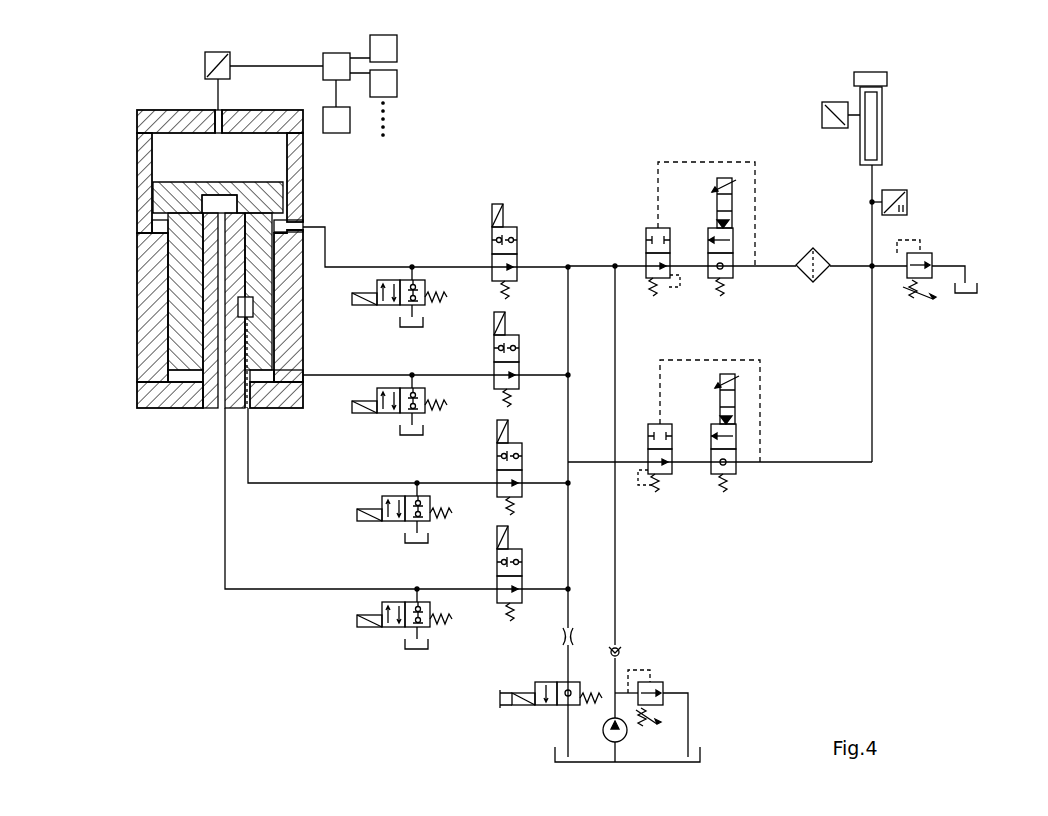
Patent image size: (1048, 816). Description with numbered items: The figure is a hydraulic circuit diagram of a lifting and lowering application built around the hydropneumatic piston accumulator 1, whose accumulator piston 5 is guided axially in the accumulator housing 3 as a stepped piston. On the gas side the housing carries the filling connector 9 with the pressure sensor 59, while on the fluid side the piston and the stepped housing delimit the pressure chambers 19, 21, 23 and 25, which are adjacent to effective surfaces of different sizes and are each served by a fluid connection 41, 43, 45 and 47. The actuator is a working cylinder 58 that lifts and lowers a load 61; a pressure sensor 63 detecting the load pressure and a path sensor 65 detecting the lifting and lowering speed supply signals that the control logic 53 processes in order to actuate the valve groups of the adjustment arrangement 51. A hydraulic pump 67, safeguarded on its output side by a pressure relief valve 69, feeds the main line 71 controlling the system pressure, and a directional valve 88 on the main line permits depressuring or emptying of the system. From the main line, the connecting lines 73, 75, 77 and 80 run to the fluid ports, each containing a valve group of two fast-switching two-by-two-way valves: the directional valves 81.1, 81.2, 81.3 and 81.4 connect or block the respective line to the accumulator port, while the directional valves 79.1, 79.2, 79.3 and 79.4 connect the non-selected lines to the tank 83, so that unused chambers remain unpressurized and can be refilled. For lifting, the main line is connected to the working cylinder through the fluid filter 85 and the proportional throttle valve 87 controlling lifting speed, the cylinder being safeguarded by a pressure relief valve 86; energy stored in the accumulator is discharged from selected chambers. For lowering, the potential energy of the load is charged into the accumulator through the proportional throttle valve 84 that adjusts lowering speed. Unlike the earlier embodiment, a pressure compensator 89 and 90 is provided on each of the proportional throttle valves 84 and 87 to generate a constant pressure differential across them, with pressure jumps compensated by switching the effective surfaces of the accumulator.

The hydropneumatic piston accumulator 1 is at (100, 140).
The accumulator housing 3 is at (145, 288).
The accumulator piston 5 is at (160, 197).
The filling connector 9 is at (217, 108).
The pressure chamber 19 is at (163, 218).
The pressure chamber 21 is at (173, 378).
The pressure chamber 23 is at (195, 307).
The pressure chamber 25 is at (230, 198).
The fluid connection 41 is at (303, 227).
The fluid connection 43 is at (308, 378).
The fluid connection 45 is at (248, 412).
The fluid connection 47 is at (220, 410).
The adjustment arrangement 51 is at (455, 218).
The control logic 53 is at (336, 53).
The working cylinder 58 is at (883, 130).
The pressure sensor 59 is at (230, 58).
The load 61 is at (890, 75).
The pressure sensor 63 is at (909, 195).
The path sensor 65 is at (822, 115).
The hydraulic pump 67 is at (607, 722).
The pressure relief valve 69 is at (655, 680).
The main line 71 is at (568, 330).
The connecting line 73 is at (328, 252).
The connecting line 75 is at (322, 375).
The connecting line 77 is at (290, 483).
The 2/2-way directional valve 79.1 is at (385, 280).
The 2/2-way directional valve 79.2 is at (385, 388).
The 2/2-way directional valve 79.3 is at (388, 520).
The 2/2-way directional valve 79.4 is at (390, 627).
The connecting line 80 is at (268, 589).
The 2/2-way directional valve 81.1 is at (518, 233).
The 2/2-way directional valve 81.2 is at (520, 350).
The 2/2-way directional valve 81.3 is at (523, 463).
The 2/2-way directional valve 81.4 is at (523, 566).
The tank 83 is at (424, 317).
The proportional throttle valve 84 is at (730, 245).
The fluid filter 85 is at (826, 275).
The pressure relief valve 86 is at (930, 253).
The proportional throttle valve 87 is at (730, 480).
The directional valve 88 is at (540, 682).
The pressure compensator 89 is at (648, 235).
The pressure compensator 90 is at (660, 427).